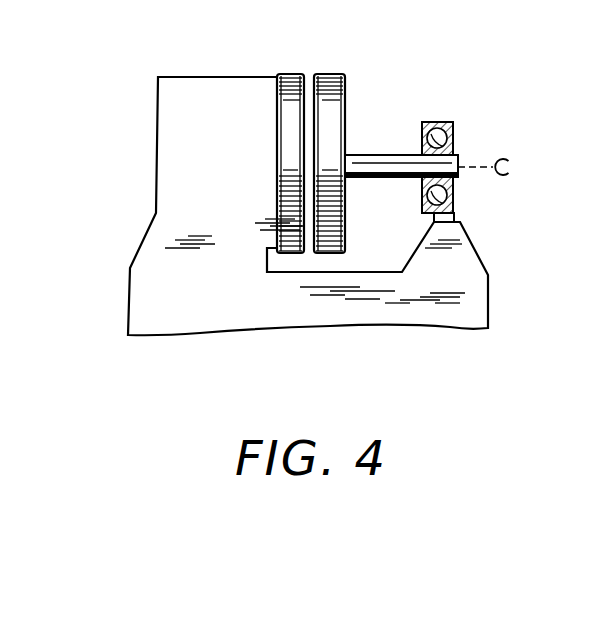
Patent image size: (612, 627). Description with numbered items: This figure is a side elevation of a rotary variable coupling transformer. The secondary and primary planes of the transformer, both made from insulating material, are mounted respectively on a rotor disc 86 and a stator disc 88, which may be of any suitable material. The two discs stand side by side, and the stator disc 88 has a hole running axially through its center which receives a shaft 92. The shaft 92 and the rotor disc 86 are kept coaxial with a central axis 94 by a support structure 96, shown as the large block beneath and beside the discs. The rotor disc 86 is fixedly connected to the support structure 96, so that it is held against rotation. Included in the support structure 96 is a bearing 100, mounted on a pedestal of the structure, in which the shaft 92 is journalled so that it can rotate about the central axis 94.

The rotor disc 86 is at (295, 73).
The stator disc 88 is at (330, 73).
The shaft 92 is at (358, 154).
The central axis 94 is at (498, 175).
The support structure 96 is at (128, 239).
The bearing 100 is at (452, 138).